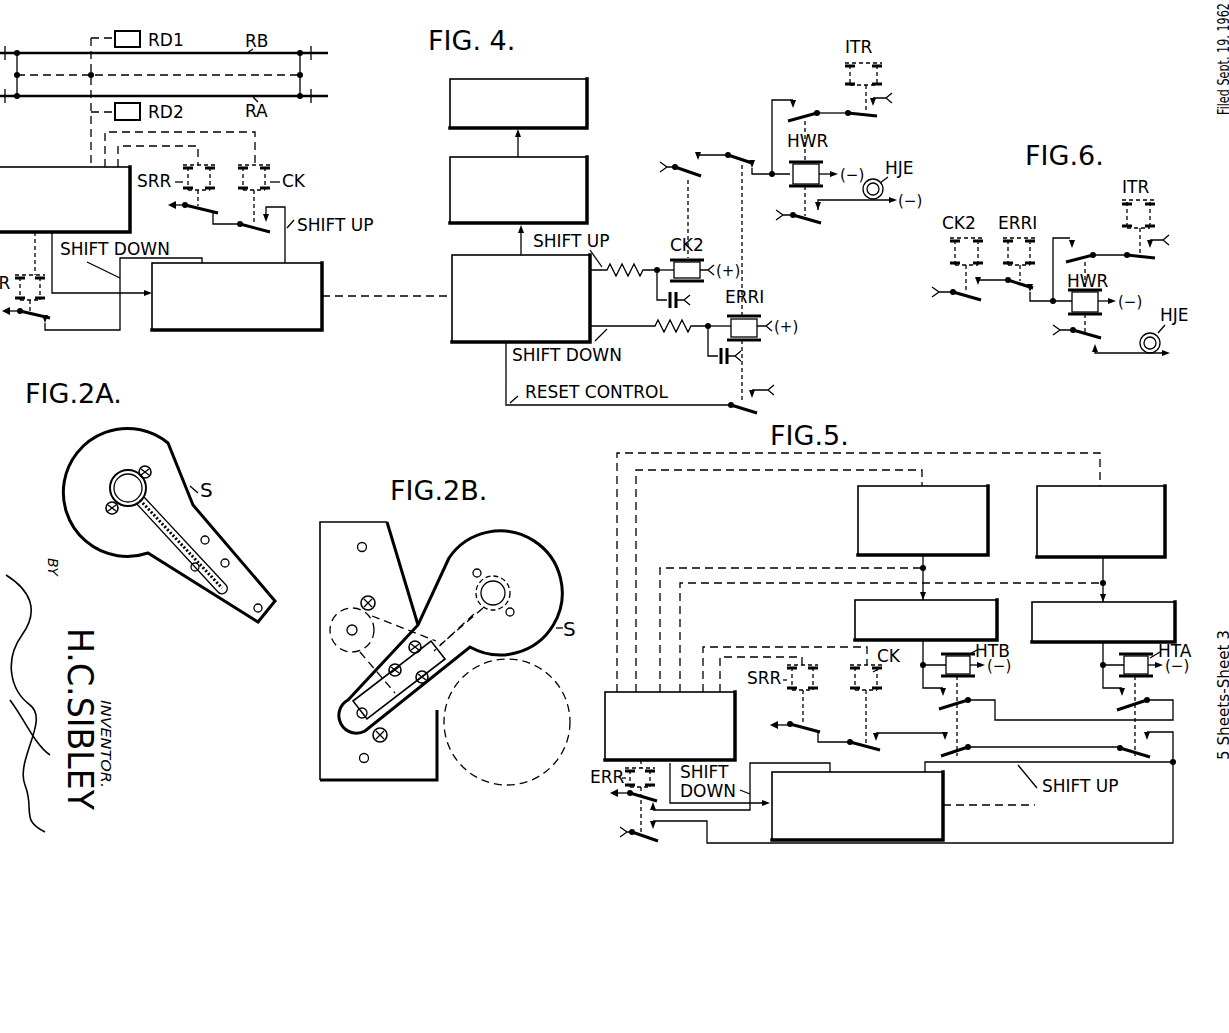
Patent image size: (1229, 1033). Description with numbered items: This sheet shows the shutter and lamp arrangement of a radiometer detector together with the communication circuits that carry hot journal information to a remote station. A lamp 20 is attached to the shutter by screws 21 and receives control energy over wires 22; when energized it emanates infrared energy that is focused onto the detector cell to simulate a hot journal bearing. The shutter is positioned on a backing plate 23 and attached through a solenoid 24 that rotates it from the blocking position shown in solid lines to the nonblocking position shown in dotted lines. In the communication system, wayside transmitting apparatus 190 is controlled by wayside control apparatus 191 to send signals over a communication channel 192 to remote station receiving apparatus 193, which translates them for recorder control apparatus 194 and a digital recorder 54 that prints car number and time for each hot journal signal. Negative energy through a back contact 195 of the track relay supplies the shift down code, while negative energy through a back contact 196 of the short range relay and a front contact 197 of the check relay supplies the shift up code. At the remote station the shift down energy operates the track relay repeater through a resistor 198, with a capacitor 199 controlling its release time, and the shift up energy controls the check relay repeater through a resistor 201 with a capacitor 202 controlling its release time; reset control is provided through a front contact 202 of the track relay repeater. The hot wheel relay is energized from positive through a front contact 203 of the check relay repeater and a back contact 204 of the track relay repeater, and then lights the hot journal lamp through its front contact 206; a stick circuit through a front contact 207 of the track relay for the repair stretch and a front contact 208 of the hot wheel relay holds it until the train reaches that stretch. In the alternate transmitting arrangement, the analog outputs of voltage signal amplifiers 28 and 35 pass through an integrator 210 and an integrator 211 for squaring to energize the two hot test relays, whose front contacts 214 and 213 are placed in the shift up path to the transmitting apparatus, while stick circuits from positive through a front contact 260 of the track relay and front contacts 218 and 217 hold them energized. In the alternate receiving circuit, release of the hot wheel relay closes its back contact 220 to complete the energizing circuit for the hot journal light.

In FIG. 2A, the lamp 20 is at (125, 474).
In FIG. 2B, the lamp 20 is at (503, 583).
In FIG. 2A, the screws 21 is at (150, 477).
In FIG. 2B, the screws 21 is at (478, 573).
In FIG. 2A, the wires 22 is at (215, 597).
In FIG. 2B, the wires 22 is at (395, 720).
In FIG. 2B, the backing plate 23 is at (320, 568).
In FIG. 2B, the solenoid 24 is at (408, 620).
In FIG. 5, the voltage signal amplifier 28 is at (1173, 528).
In FIG. 5, the voltage signal amplifier 35 is at (857, 520).
In FIG. 4, the digital recorder 54 is at (453, 125).
In FIG. 4, the wayside transmitting apparatus 190 is at (285, 331).
In FIG. 5, the wayside transmitting apparatus 190 is at (770, 817).
In FIG. 4, the wayside control apparatus 191 is at (65, 214).
In FIG. 5, the wayside control apparatus 191 is at (738, 701).
In FIG. 4, the communication channel 192 is at (396, 296).
In FIG. 5, the communication channel 192 is at (1002, 807).
In FIG. 4, the remote station receiving apparatus 193 is at (490, 342).
In FIG. 4, the recorder control apparatus 194 is at (450, 211).
In FIG. 4, the back contact of relay ERR 195 is at (30, 319).
In FIG. 5, the back contact of relay ERR 195 is at (638, 798).
In FIG. 4, the back contact of relay SRR 196 is at (178, 213).
In FIG. 5, the back contact of relay SRR 196 is at (783, 722).
In FIG. 4, the front contact of relay CK 197 is at (263, 232).
In FIG. 5, the front contact of relay CK 197 is at (882, 745).
In FIG. 4, the resistor 198 is at (650, 339).
In FIG. 4, the capacitor 199 is at (730, 363).
In FIG. 4, the resistor 201 is at (623, 281).
In FIG. 4, the capacitor and front contact of relay ERR1 202 is at (666, 299).
In FIG. 4, the front contact of check relay CK2 203 is at (694, 173).
In FIG. 6, the front contact of check relay CK2 203 is at (966, 298).
In FIG. 4, the back contact of track relay ERR1 204 is at (742, 152).
In FIG. 6, the back contact of track relay ERR1 204 is at (1023, 287).
In FIG. 4, the front contact of relay HWR 206 is at (815, 228).
In FIG. 4, the front contact of relay 1TR 207 is at (865, 115).
In FIG. 6, the front contact of relay 1TR 207 is at (1143, 258).
In FIG. 4, the front contact of relay HWR 208 is at (800, 115).
In FIG. 6, the front contact of relay HWR 208 is at (1075, 258).
In FIG. 5, the integrator circuit 210 is at (1140, 597).
In FIG. 5, the integrator circuit 211 is at (855, 610).
In FIG. 5, the front contact of relay HTB 213 is at (998, 739).
In FIG. 5, the front contact of relay HTA 214 is at (1128, 748).
In FIG. 5, the front contact of relay HTB 217 is at (934, 707).
In FIG. 5, the front contact of relay HTA 218 is at (1110, 708).
In FIG. 6, the back contact of relay HWR 220 is at (1082, 335).
In FIG. 5, the front contact of relay ERR 260 is at (645, 833).